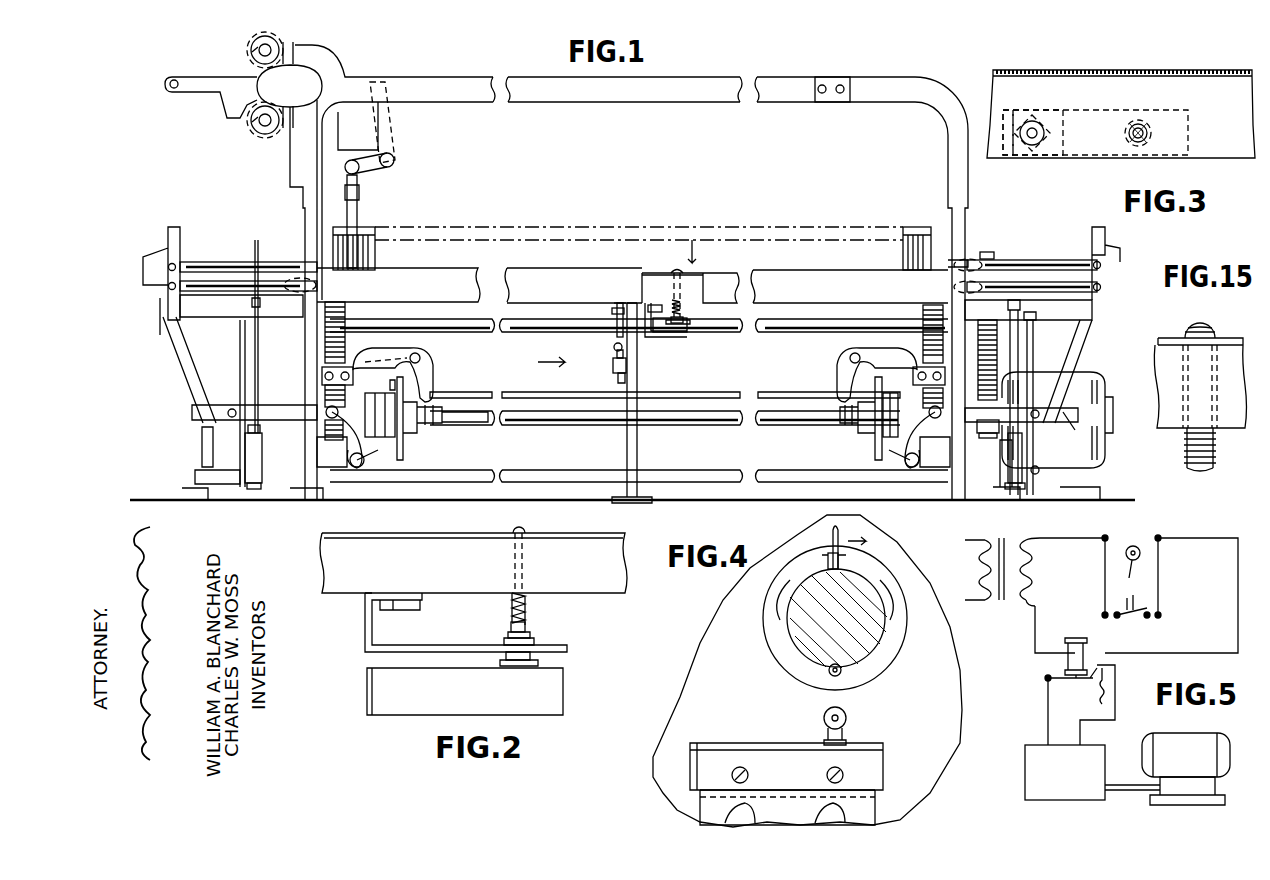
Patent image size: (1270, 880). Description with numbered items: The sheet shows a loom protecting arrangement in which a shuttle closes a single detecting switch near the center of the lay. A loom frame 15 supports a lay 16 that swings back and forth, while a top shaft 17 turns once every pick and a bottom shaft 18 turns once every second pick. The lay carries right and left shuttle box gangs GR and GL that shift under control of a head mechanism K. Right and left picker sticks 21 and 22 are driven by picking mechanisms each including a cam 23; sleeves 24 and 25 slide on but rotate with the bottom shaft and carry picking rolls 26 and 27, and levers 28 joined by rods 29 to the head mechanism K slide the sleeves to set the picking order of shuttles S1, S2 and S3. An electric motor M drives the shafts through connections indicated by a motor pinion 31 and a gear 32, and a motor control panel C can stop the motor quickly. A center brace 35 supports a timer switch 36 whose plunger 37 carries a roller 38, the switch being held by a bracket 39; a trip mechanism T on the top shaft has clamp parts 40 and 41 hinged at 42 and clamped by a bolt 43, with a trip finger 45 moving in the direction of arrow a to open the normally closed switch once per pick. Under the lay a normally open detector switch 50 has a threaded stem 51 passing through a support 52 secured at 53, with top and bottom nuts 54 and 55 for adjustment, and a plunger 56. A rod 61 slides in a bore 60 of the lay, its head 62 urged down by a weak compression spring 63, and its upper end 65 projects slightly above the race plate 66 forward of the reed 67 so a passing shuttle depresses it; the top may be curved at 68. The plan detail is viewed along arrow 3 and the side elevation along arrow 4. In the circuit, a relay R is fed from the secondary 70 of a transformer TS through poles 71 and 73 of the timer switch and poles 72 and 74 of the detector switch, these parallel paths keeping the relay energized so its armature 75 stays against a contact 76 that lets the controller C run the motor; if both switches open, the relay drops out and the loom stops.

In FIG. 1, the head mechanism K is at (247, 76).
In FIG. 1, the left shuttle box gang GL is at (275, 264).
In FIG. 1, the right shuttle box gang GR is at (1052, 263).
In FIG. 1, the shuttle S1 is at (1000, 285).
In FIG. 1, the shuttle S2 is at (1000, 292).
In FIG. 1, the shuttle S3 is at (292, 292).
In FIG. 1, the loom frame 15 is at (312, 335).
In FIG. 1, the lay 16 is at (483, 280).
In FIG. 3, the lay 16 is at (1228, 96).
In FIG. 15, the lay 16 is at (1232, 416).
In FIG. 2, the lay 16 is at (346, 591).
In FIG. 1, the top shaft 17 is at (537, 333).
In FIG. 4, the top shaft 17 is at (868, 609).
In FIG. 1, the bottom shaft 18 is at (558, 423).
In FIG. 1, the right picker stick 21 is at (1080, 344).
In FIG. 1, the left picker stick 22 is at (193, 352).
In FIG. 1, the cam 23 is at (370, 466).
In FIG. 1, the sleeve 24 is at (858, 428).
In FIG. 1, the sleeve 25 is at (414, 428).
In FIG. 1, the picking roll 26 is at (890, 390).
In FIG. 1, the picking roll 27 is at (390, 380).
In FIG. 1, the lever 28 is at (430, 368).
In FIG. 1, the rod 29 is at (355, 212).
In FIG. 1, the motor pinion 31 is at (990, 430).
In FIG. 1, the gear 32 is at (980, 363).
In FIG. 1, the center brace 35 is at (627, 430).
In FIG. 4, the center brace 35 is at (945, 761).
In FIG. 1, the timer switch 36 is at (627, 364).
In FIG. 4, the timer switch 36 is at (883, 757).
In FIG. 5, the timer switch 36 is at (1145, 526).
In FIG. 1, the plunger 37 is at (617, 353).
In FIG. 4, the plunger 37 is at (842, 736).
In FIG. 1, the roller 38 is at (614, 346).
In FIG. 4, the roller 38 is at (843, 713).
In FIG. 1, the bracket 39 is at (616, 376).
In FIG. 4, the bracket 39 is at (868, 809).
In FIG. 4, the clamp part 40 is at (790, 631).
In FIG. 1, the clamp part 41 is at (617, 320).
In FIG. 4, the clamp part 41 is at (875, 636).
In FIG. 4, the hinge 42 is at (828, 676).
In FIG. 1, the bolt 43 is at (612, 310).
In FIG. 4, the bolt 43 is at (840, 559).
In FIG. 1, the trip finger 45 is at (618, 303).
In FIG. 4, the trip finger 45 is at (832, 541).
In FIG. 5, the trip finger 45 is at (1130, 579).
In FIG. 1, the detector switch 50 is at (668, 333).
In FIG. 3, the detector switch 50 is at (1088, 146).
In FIG. 2, the detector switch 50 is at (395, 704).
In FIG. 5, the detector switch 50 is at (1132, 623).
In FIG. 1, the screw threaded stem 51 is at (680, 323).
In FIG. 3, the screw threaded stem 51 is at (1130, 149).
In FIG. 2, the screw threaded stem 51 is at (532, 641).
In FIG. 1, the support 52 is at (648, 332).
In FIG. 3, the support 52 is at (1000, 149).
In FIG. 2, the support 52 is at (443, 646).
In FIG. 1, the securing point 53 is at (658, 302).
In FIG. 3, the securing point 53 is at (1033, 153).
In FIG. 2, the securing point 53 is at (405, 609).
In FIG. 3, the top nut 54 is at (1147, 148).
In FIG. 2, the top nut 54 is at (505, 641).
In FIG. 1, the bottom nut 55 is at (690, 322).
In FIG. 2, the bottom nut 55 is at (540, 656).
In FIG. 2, the plunger 56 is at (512, 626).
In FIG. 3, the bore 60 is at (1143, 124).
In FIG. 15, the bore 60 is at (1180, 379).
In FIG. 2, the bore 60 is at (512, 576).
In FIG. 1, the rod 61 is at (690, 285).
In FIG. 3, the rod 61 is at (1147, 136).
In FIG. 15, the rod 61 is at (1212, 469).
In FIG. 2, the rod 61 is at (528, 549).
In FIG. 5, the rod 61 is at (1136, 606).
In FIG. 2, the head 62 is at (527, 633).
In FIG. 1, the compression spring 63 is at (689, 298).
In FIG. 15, the compression spring 63 is at (1184, 441).
In FIG. 2, the compression spring 63 is at (525, 601).
In FIG. 1, the upper end 65 is at (680, 273).
In FIG. 15, the upper end 65 is at (1212, 331).
In FIG. 2, the upper end 65 is at (515, 533).
In FIG. 1, the race plate 66 is at (657, 273).
In FIG. 3, the race plate 66 is at (1057, 89).
In FIG. 15, the race plate 66 is at (1170, 336).
In FIG. 2, the race plate 66 is at (437, 534).
In FIG. 1, the reed 67 is at (903, 249).
In FIG. 3, the reed 67 is at (1155, 74).
In FIG. 15, the curved top 68 is at (1205, 326).
In FIG. 5, the secondary 70 is at (1027, 573).
In FIG. 5, the pole 71 is at (1160, 540).
In FIG. 5, the pole 72 is at (1150, 619).
In FIG. 5, the pole 73 is at (1103, 540).
In FIG. 5, the pole 74 is at (1117, 619).
In FIG. 5, the armature 75 is at (1088, 681).
In FIG. 5, the contact 76 is at (1115, 674).
In FIG. 5, the control relay R is at (1068, 656).
In FIG. 5, the motor control panel C is at (1045, 759).
In FIG. 1, the electric motor M is at (1088, 400).
In FIG. 5, the electric motor M is at (1195, 751).
In FIG. 1, the switch trip mechanism T is at (612, 323).
In FIG. 4, the switch trip mechanism T is at (782, 601).
In FIG. 5, the switch trip mechanism T is at (1126, 553).
In FIG. 5, the transformer TS is at (1000, 583).
In FIG. 4, the arrow a is at (857, 530).
In FIG. 1, the arrow 3 is at (699, 250).
In FIG. 1, the arrow 4 is at (551, 352).